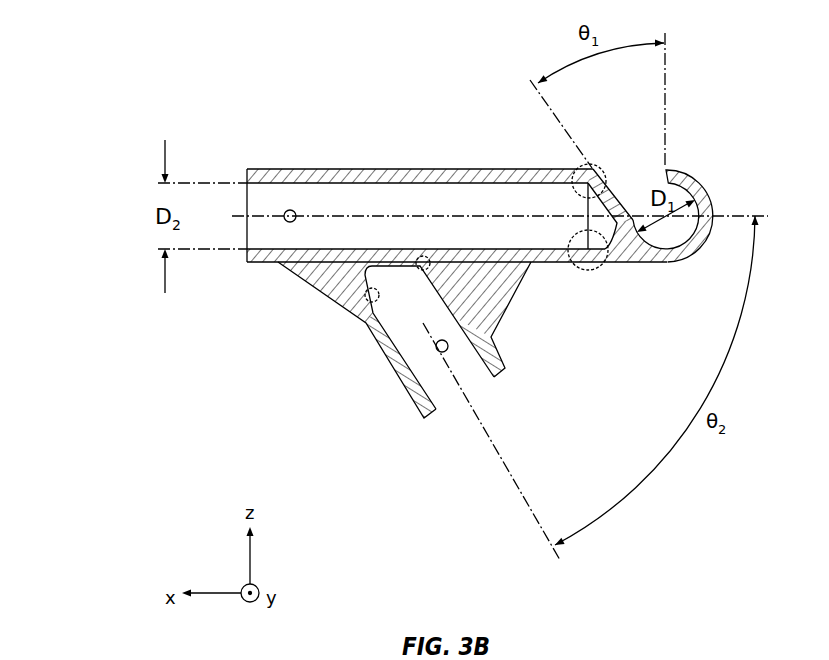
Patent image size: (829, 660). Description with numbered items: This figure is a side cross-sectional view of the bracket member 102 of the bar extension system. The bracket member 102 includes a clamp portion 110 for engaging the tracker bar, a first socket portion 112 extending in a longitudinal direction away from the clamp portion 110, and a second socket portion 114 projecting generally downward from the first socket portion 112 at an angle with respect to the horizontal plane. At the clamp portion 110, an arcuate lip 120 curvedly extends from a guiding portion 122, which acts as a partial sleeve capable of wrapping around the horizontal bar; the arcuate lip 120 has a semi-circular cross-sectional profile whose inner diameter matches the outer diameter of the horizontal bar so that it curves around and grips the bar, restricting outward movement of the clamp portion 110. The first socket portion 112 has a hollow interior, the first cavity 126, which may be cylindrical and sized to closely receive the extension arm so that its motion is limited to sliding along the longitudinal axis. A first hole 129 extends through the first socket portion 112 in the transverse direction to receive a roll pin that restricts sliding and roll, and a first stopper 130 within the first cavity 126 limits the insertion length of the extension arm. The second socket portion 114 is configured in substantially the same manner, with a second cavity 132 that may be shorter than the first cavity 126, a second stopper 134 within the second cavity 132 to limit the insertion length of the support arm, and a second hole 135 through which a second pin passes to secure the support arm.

The bracket member 102 is at (381, 271).
The clamp portion 110 is at (634, 262).
The first socket portion 112 is at (397, 168).
The second socket portion 114 is at (414, 400).
The arcuate lip 120 is at (688, 175).
The guiding portion 122 is at (618, 197).
The first cavity 126 is at (258, 197).
The first hole 129 is at (291, 210).
The first stopper 130 is at (569, 252).
The second cavity 132 is at (440, 385).
The second stopper 134 is at (379, 298).
The second hole 135 is at (448, 350).